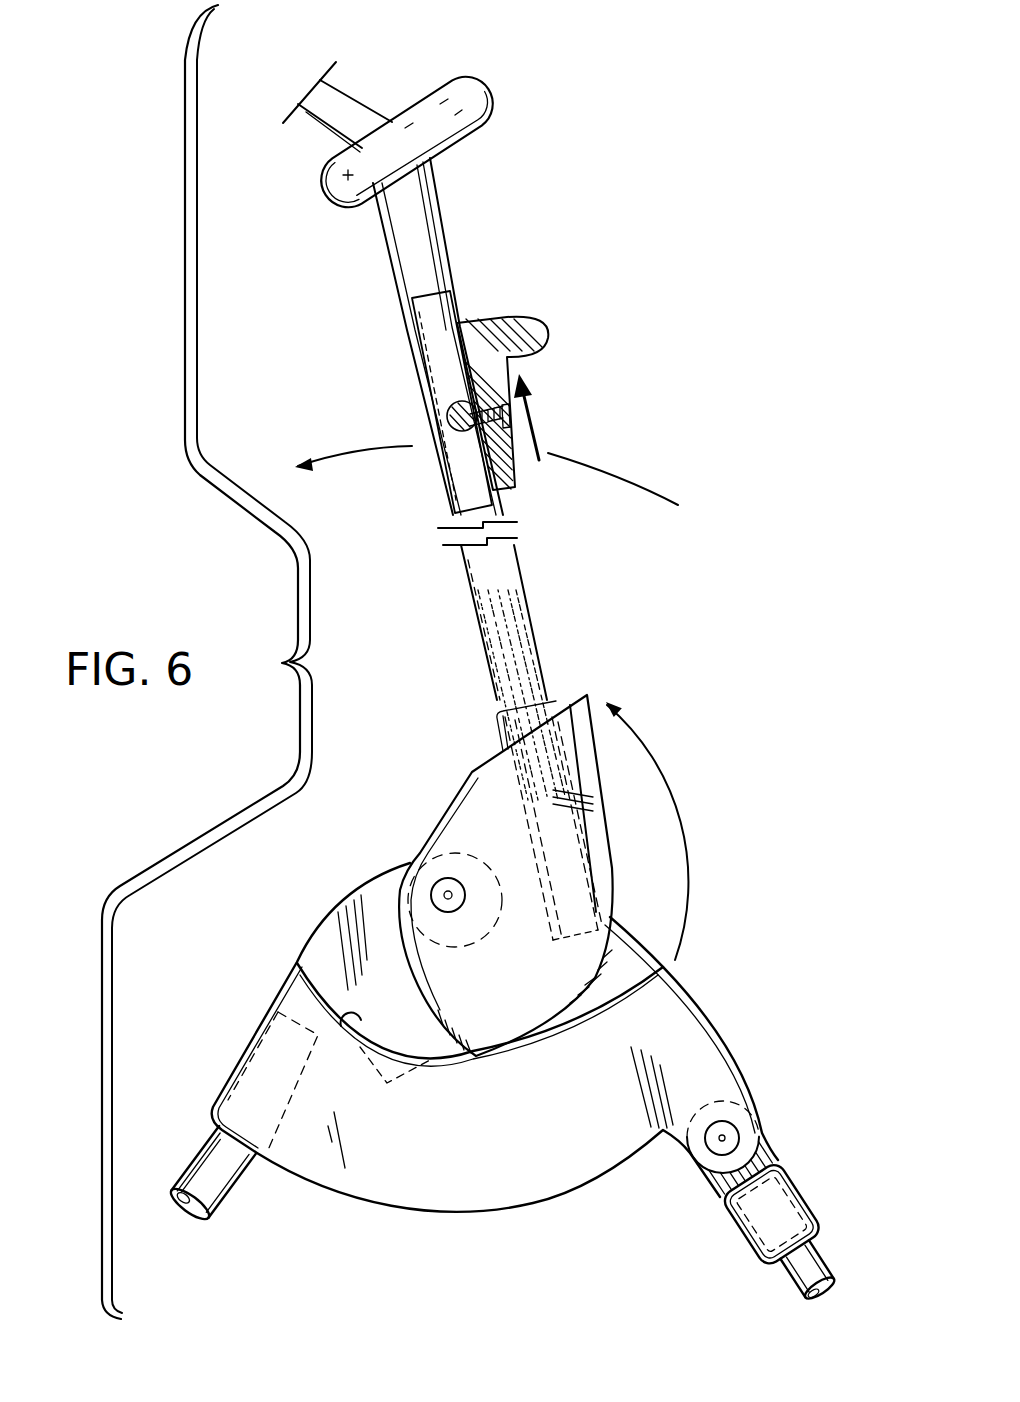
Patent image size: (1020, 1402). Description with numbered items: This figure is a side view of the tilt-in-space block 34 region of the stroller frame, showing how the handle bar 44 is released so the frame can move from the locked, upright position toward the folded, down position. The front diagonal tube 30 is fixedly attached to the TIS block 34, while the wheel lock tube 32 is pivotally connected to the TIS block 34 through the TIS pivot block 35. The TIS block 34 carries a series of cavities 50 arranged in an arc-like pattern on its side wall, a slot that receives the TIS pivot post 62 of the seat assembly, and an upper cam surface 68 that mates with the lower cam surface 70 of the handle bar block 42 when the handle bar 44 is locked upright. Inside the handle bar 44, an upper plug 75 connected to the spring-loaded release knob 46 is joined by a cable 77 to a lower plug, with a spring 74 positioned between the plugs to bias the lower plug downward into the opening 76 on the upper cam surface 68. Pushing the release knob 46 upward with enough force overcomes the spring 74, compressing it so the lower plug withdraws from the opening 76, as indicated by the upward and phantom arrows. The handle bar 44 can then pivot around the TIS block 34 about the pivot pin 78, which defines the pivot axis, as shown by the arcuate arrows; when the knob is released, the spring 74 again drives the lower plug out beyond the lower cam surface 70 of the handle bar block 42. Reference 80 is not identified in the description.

The front diagonal tube 30 is at (208, 1177).
The wheel lock tube 32 is at (815, 1262).
The tilt-in-space (TIS) block 34 is at (700, 975).
The TIS pivot block 35 is at (775, 1195).
The handle bar block 42 is at (458, 767).
The handle bar 44 is at (458, 200).
The spring-loaded release knob 46 is at (487, 322).
The apertures or cavities 50 is at (695, 1048).
The TIS pivot post 62 is at (457, 945).
The upper cam surface 68 is at (352, 1028).
The lower cam surface 70 is at (614, 862).
The spring 74 is at (540, 655).
The upper plug 75 is at (440, 376).
The cavity or opening 76 is at (388, 1082).
The cable 77 is at (493, 572).
The pivot pin 78 is at (447, 892).
The lever edge 80 is at (430, 825).